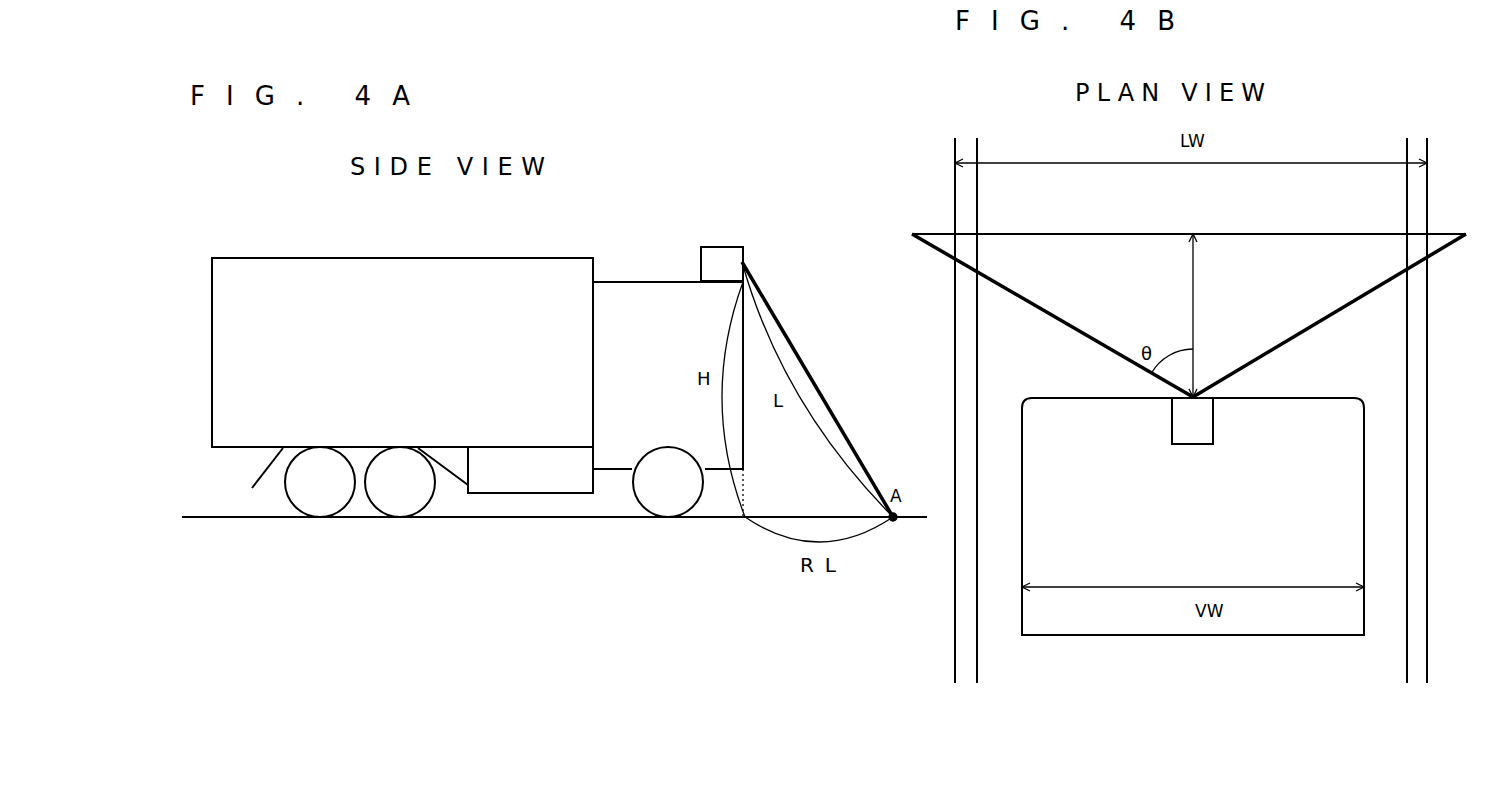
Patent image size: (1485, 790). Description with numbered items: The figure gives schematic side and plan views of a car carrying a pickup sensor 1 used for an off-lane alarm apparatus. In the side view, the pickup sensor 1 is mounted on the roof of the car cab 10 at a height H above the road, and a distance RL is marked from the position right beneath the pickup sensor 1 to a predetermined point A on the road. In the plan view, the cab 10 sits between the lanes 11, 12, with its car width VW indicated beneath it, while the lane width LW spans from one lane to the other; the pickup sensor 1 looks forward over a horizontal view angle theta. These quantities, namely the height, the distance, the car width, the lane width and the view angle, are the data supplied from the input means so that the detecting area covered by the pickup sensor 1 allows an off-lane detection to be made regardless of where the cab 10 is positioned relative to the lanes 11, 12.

In FIG. 4A, the pickup sensor 1 is at (743, 254).
In FIG. 4B, the pickup sensor 1 is at (1172, 425).
In FIG. 4A, the car cab 10 is at (681, 282).
In FIG. 4B, the car cab 10 is at (1065, 635).
In FIG. 4B, the lane 11 is at (967, 208).
In FIG. 4B, the lane 12 is at (1405, 207).